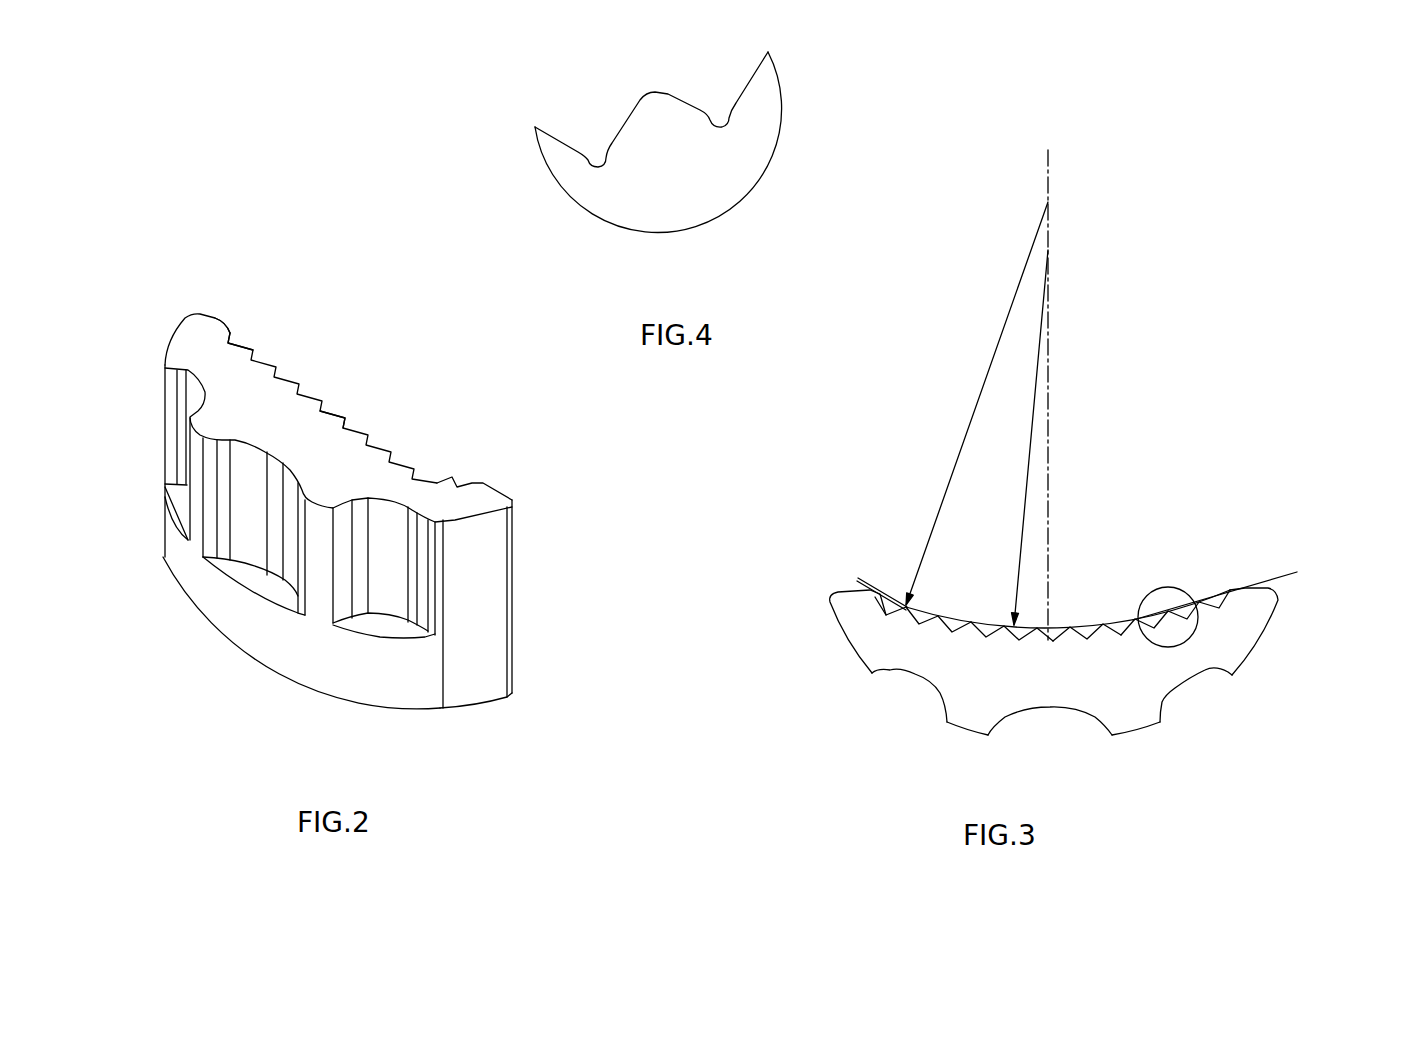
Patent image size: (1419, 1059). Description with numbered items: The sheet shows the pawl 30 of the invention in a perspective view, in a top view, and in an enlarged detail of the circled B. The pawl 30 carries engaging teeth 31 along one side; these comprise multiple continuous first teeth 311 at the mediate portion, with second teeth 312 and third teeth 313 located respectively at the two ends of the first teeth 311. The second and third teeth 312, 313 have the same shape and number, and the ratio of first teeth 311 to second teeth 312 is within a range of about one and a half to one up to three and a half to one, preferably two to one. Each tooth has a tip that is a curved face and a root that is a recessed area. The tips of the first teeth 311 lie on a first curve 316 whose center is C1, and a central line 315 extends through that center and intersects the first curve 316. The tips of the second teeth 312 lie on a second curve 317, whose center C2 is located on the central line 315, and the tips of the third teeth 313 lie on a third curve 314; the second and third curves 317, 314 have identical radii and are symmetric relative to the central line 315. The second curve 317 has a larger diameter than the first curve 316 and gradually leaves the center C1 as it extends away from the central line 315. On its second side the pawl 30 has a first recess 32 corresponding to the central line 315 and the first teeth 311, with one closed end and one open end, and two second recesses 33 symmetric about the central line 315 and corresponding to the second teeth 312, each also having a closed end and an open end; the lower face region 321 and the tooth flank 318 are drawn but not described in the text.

In FIG. 2, the pawl 30 is at (197, 340).
In FIG. 3, the pawl 30 is at (1240, 638).
In FIG. 2, the engaging teeth 31 is at (293, 398).
In FIG. 2, the first teeth 311 is at (337, 435).
In FIG. 4, the first teeth 311 is at (617, 142).
In FIG. 2, the second teeth 312 is at (225, 337).
In FIG. 4, the second teeth 312 is at (643, 140).
In FIG. 3, the second teeth 312 is at (902, 605).
In FIG. 3, the third teeth 313 is at (1198, 605).
In FIG. 3, the third curve 314 is at (1241, 590).
In FIG. 3, the central line 315 is at (1050, 418).
In FIG. 3, the first curve 316 is at (1078, 625).
In FIG. 3, the second curve 317 is at (868, 588).
In FIG. 3, the tooth flank 318 is at (937, 612).
In FIG. 2, the first recess 32 is at (252, 533).
In FIG. 3, the first recess 32 is at (1058, 730).
In FIG. 2, the lower outer face 321 is at (225, 610).
In FIG. 2, the second recesses 33 is at (172, 417).
In FIG. 3, the second recesses 33 is at (1195, 693).
In FIG. 3, the circled B is at (1178, 587).
In FIG. 3, the center of the first curve C1 is at (1048, 250).
In FIG. 3, the center of the second curve C2 is at (1048, 202).